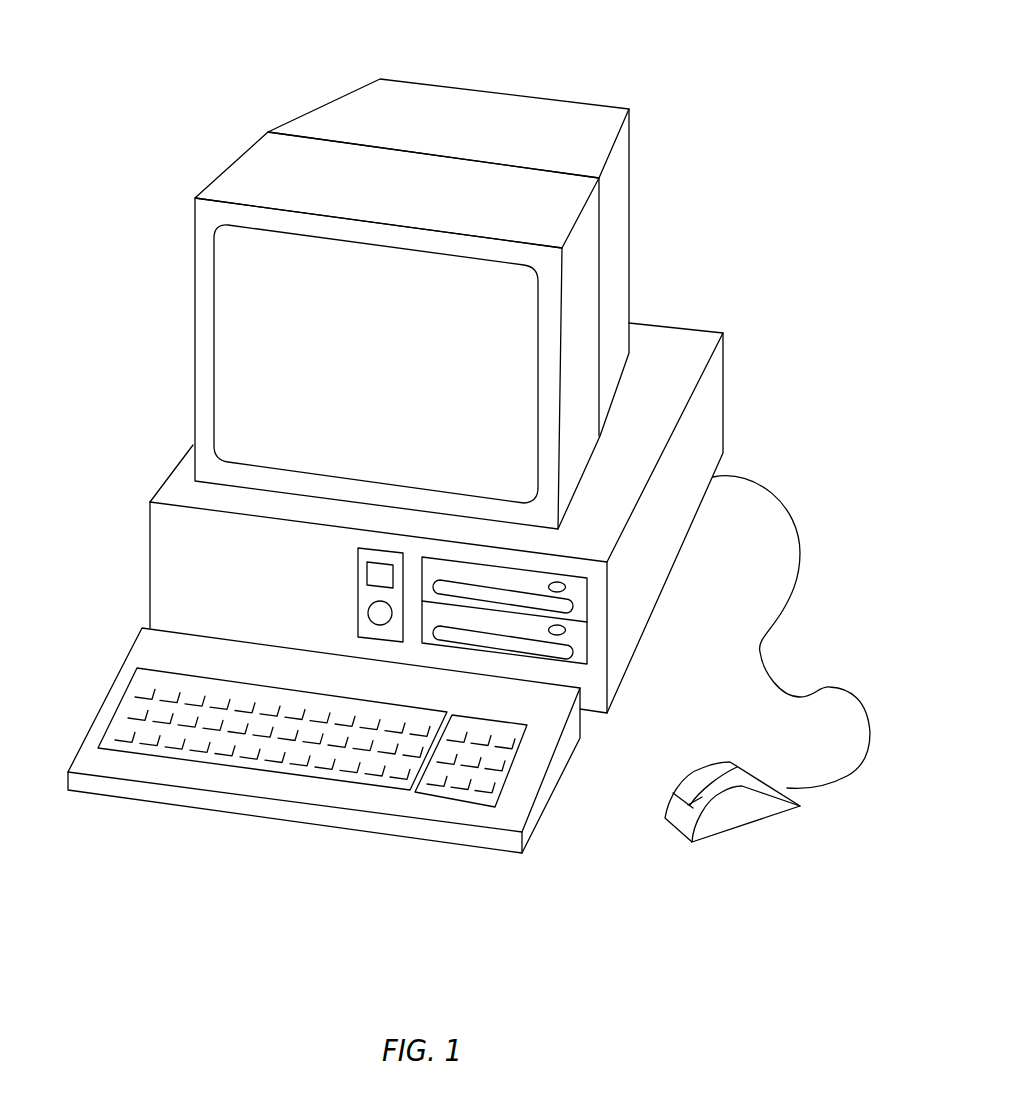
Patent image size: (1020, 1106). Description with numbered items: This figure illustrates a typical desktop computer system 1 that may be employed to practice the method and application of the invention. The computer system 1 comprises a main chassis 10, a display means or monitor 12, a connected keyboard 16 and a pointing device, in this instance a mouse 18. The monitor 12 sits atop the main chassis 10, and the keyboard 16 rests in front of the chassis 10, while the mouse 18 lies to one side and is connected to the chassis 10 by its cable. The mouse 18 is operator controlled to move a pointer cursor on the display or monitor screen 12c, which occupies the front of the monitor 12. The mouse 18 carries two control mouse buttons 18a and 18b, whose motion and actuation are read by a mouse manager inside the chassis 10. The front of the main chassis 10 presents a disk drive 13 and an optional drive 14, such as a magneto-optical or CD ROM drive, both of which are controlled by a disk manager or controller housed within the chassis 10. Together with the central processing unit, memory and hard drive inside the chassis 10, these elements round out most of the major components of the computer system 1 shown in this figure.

The computer system 1 is at (481, 481).
The main chassis 10 is at (485, 518).
The display means or monitor 12 is at (403, 304).
The display or monitor screen 12c is at (233, 389).
The disk drive 13 is at (578, 592).
The optional drive 14 is at (577, 660).
The keyboard 16 is at (145, 648).
The mouse 18 is at (751, 708).
The mouse button 18a is at (703, 777).
The mouse button 18b is at (690, 805).